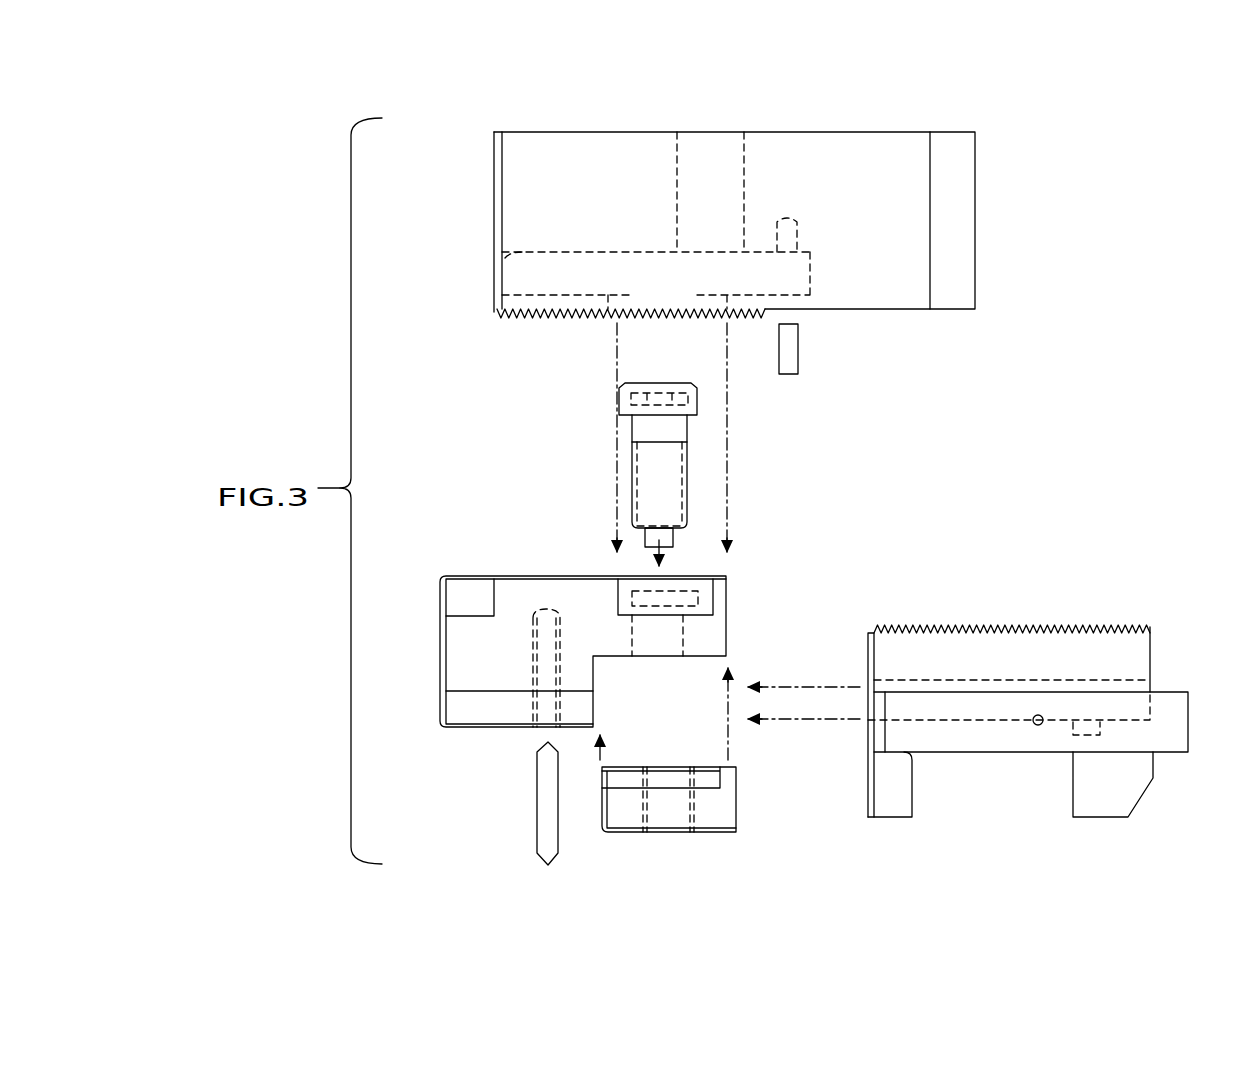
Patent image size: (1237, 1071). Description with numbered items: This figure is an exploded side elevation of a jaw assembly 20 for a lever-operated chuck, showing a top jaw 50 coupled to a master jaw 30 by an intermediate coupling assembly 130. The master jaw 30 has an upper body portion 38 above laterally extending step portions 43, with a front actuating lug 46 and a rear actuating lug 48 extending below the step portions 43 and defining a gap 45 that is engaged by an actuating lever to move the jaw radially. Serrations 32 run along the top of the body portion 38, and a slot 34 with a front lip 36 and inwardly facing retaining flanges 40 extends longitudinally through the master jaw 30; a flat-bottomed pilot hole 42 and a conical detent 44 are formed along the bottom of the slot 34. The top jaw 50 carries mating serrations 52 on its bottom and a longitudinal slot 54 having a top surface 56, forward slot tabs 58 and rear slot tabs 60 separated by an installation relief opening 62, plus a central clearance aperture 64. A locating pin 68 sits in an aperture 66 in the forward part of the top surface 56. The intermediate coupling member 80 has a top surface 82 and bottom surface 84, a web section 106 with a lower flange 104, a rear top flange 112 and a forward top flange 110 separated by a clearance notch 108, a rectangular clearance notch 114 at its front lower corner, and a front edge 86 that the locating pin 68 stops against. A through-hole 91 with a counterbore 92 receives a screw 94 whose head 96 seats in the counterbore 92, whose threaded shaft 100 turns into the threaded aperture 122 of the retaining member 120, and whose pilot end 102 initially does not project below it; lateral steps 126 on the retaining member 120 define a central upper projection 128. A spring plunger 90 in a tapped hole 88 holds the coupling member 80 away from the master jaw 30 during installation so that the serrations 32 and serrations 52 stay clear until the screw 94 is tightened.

The jaw assembly 20 is at (1100, 116).
The master jaw 30 is at (1101, 622).
The serrations 32 is at (915, 626).
The slot 34 is at (932, 705).
The front lip 36 is at (866, 722).
The upper body portion 38 is at (1133, 660).
The retaining flanges 40 is at (978, 656).
The flat-bottomed pilot hole 42 is at (1079, 740).
The step portions 43 is at (1170, 740).
The conical detent 44 is at (960, 722).
The gap 45 is at (935, 795).
The front actuating lug 46 is at (1105, 800).
The rear actuating lug 48 is at (890, 802).
The top jaw 50 is at (916, 126).
The serrations 52 is at (583, 317).
The longitudinal slot 54 is at (497, 283).
The top surface 56 is at (500, 262).
The forward slot tabs 58 is at (753, 302).
The rear slot tabs 60 is at (542, 310).
The installation relief opening 62 is at (672, 302).
The clearance aperture 64 is at (743, 158).
The aperture 66 is at (797, 232).
The locating pin 68 is at (798, 349).
The intermediate coupling member 80 is at (470, 562).
The top surface 82 is at (518, 576).
The bottom surface 84 is at (512, 733).
The front edge 86 is at (715, 583).
The tapped hole 88 is at (530, 653).
The spring plunger 90 is at (537, 840).
The through-hole 91 is at (684, 640).
The counterbore 92 is at (620, 591).
The screw 94 is at (708, 474).
The head 96 is at (697, 398).
The threaded shaft 100 is at (687, 480).
The pilot end 102 is at (673, 540).
The lower flange 104 is at (470, 712).
The web section 106 is at (455, 652).
The clearance notch 108 is at (578, 590).
The forward top flange 110 is at (708, 601).
The rear top flange 112 is at (457, 601).
The rectangular clearance notch 114 is at (610, 660).
The retaining member 120 is at (740, 806).
The threaded aperture 122 is at (643, 818).
The lateral steps 126 is at (622, 817).
The central upper projection 128 is at (706, 783).
The intermediate coupling assembly 130 is at (864, 522).